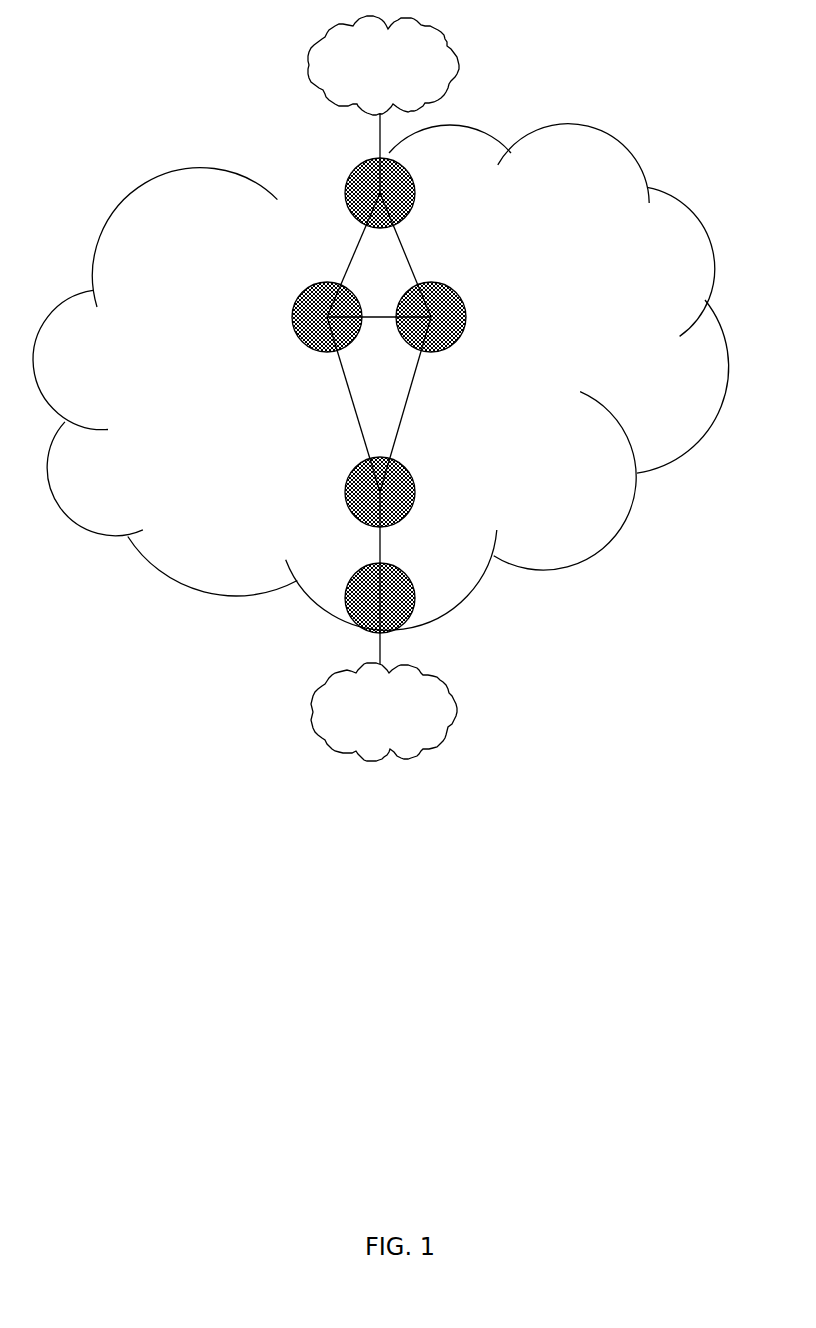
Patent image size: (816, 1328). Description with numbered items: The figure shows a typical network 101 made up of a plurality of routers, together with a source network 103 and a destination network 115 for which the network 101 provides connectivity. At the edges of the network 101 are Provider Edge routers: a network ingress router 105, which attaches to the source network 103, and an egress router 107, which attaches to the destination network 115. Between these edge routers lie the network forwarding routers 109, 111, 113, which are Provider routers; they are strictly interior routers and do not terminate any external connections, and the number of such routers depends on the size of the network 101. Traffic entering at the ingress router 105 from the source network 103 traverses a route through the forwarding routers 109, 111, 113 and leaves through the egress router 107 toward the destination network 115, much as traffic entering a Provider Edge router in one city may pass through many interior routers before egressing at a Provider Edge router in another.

The network 101 is at (583, 209).
The source network 103 is at (462, 712).
The ingress router 105 is at (450, 598).
The egress router 107 is at (448, 193).
The forwarding router 109 is at (466, 492).
The forwarding router 111 is at (239, 317).
The forwarding router 113 is at (518, 317).
The destination network 115 is at (479, 65).